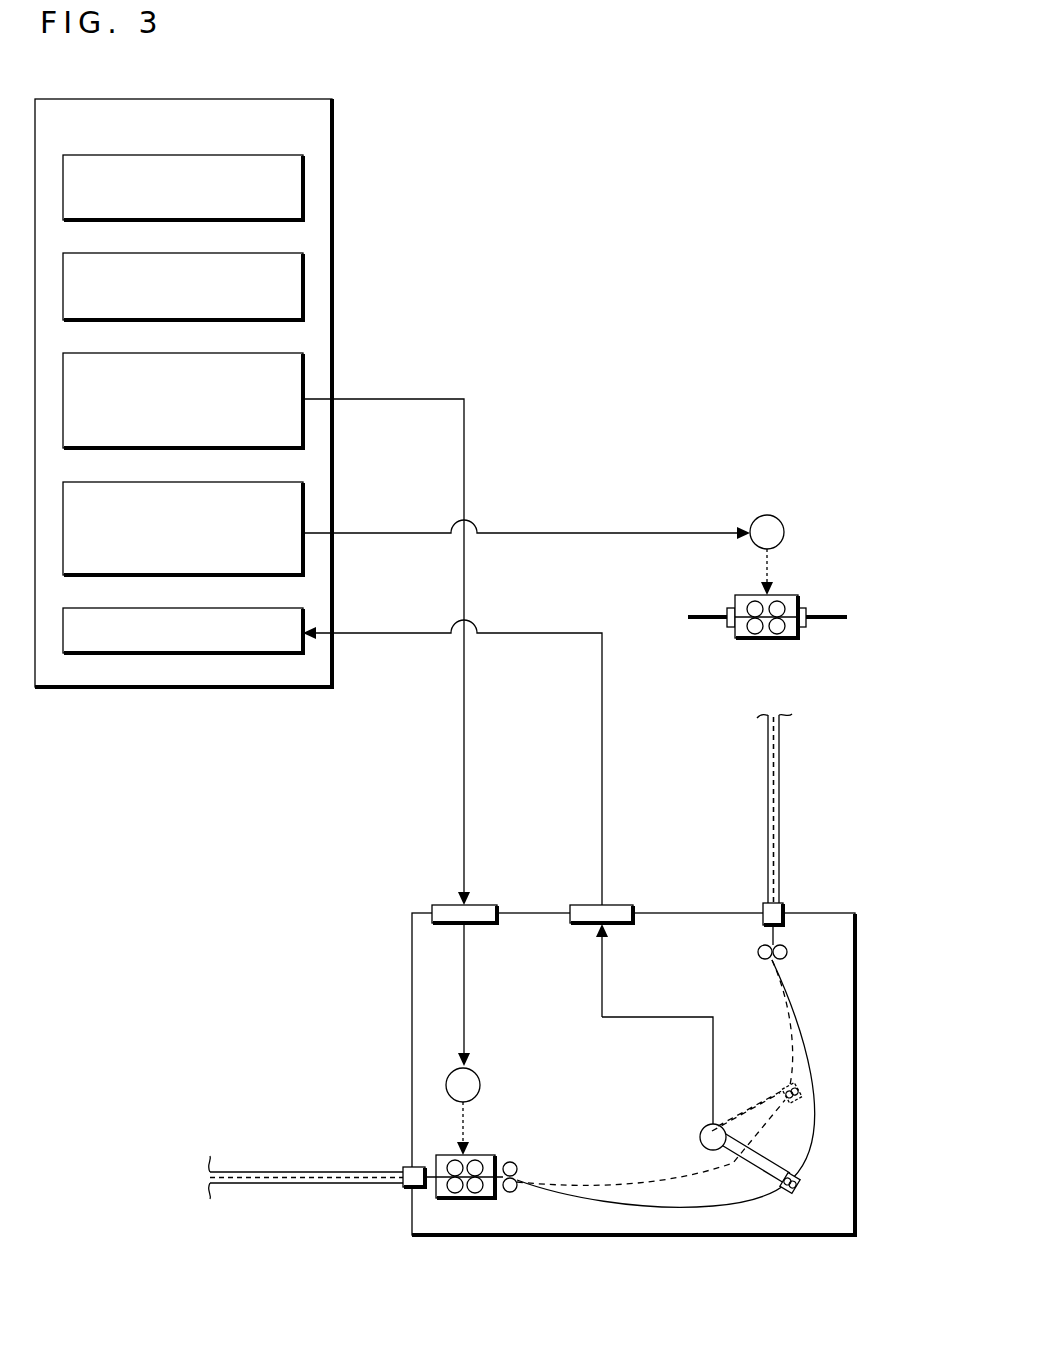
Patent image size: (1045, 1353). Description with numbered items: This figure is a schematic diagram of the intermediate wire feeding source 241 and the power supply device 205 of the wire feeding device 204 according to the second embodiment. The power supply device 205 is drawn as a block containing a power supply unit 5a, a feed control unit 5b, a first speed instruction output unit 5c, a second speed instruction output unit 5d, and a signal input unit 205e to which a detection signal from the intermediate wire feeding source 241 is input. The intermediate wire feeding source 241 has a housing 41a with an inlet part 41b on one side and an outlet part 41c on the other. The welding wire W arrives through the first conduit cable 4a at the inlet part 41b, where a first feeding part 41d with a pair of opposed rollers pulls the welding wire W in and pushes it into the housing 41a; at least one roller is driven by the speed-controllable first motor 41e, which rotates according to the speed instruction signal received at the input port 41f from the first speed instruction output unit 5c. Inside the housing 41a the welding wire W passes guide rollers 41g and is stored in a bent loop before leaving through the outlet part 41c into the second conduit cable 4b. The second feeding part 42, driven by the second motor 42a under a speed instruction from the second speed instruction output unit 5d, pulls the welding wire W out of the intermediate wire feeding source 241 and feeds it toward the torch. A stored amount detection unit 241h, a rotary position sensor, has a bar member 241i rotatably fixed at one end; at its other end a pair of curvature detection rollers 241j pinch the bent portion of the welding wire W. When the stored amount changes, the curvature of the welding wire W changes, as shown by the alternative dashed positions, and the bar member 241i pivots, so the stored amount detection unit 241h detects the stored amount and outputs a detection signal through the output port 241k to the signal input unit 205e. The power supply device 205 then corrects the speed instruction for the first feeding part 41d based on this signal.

The power supply device 205 is at (314, 78).
The power supply unit 5a is at (305, 177).
The feed control unit 5b is at (305, 271).
The first speed instruction output unit 5c is at (305, 378).
The second speed instruction output unit 5d is at (305, 513).
The signal input unit 205e is at (305, 620).
The wire feeding device 204 is at (593, 472).
The second motor 42a is at (784, 525).
The second feeding part 42 is at (781, 597).
The intermediate wire feeding source 241 is at (388, 985).
The input port 41f is at (504, 893).
The output port 241k is at (640, 893).
The second conduit cable 4b is at (780, 760).
The outlet part 41c is at (783, 901).
The housing 41a is at (845, 913).
The guide roller 41g is at (787, 952).
The first motor 41e is at (480, 1082).
The welding wire W is at (780, 805).
The first conduit cable 4a is at (250, 1170).
The inlet part 41b is at (403, 1170).
The first feeding part 41d is at (468, 1200).
The stored amount detection unit 241h is at (702, 1130).
The bar member 241i is at (733, 1158).
The curvature detection rollers 241j is at (800, 1190).